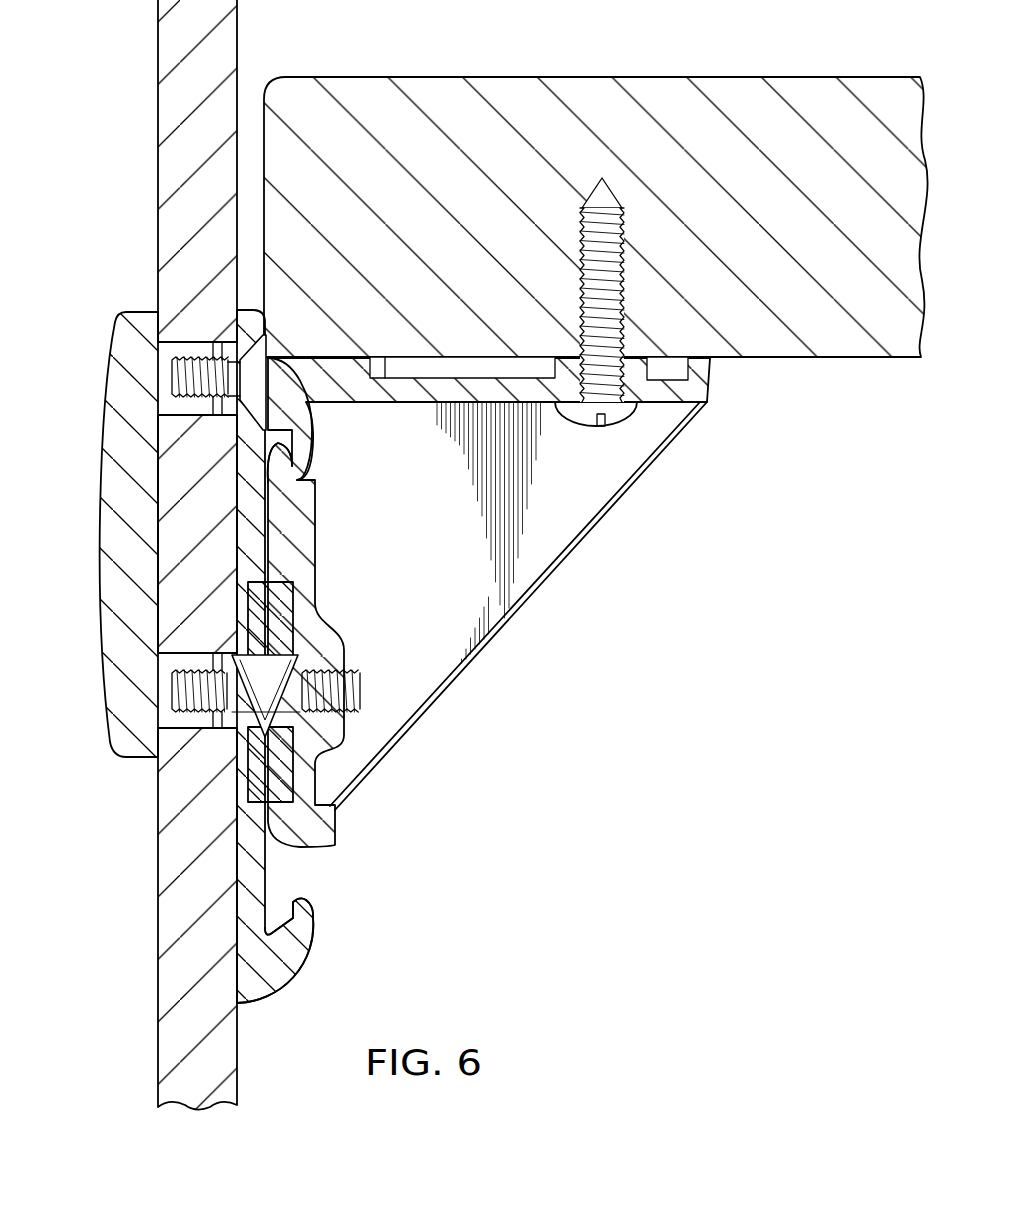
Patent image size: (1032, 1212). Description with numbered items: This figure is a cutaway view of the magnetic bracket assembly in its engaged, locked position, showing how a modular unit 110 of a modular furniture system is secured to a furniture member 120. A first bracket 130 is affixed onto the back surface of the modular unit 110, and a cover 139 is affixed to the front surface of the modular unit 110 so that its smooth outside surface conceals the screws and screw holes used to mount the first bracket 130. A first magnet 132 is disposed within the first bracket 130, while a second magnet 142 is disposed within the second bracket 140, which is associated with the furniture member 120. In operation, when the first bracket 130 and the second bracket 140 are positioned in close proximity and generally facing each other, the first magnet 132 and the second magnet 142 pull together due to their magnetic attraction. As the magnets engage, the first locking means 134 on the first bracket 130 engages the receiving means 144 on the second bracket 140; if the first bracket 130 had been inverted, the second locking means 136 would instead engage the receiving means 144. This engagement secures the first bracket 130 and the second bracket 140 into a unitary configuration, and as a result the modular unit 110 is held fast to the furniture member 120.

The modular unit 110 is at (157, 107).
The furniture member 120 is at (728, 90).
The first bracket 130 is at (268, 858).
The first magnet 132 is at (253, 603).
The first locking means 134 is at (305, 446).
The second locking means 136 is at (302, 927).
The cover 139 is at (106, 530).
The second bracket 140 is at (316, 537).
The second magnet 142 is at (275, 603).
The receiving means 144 is at (314, 498).